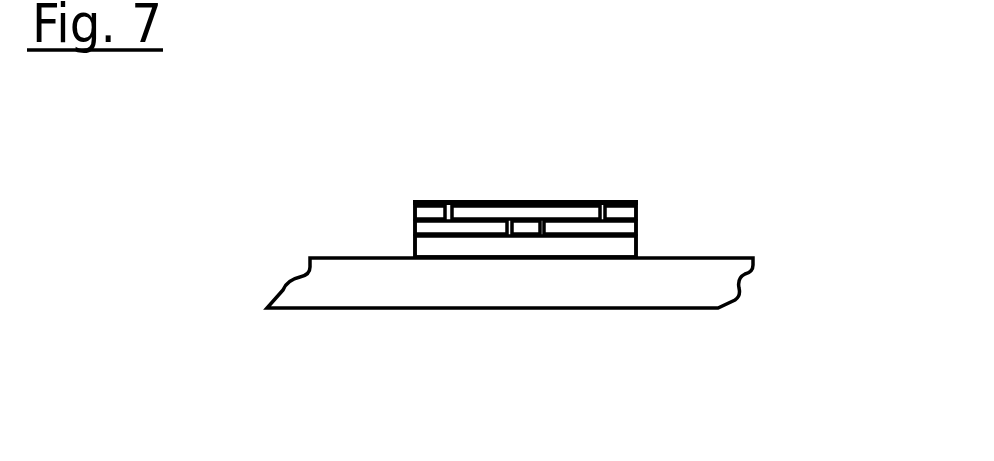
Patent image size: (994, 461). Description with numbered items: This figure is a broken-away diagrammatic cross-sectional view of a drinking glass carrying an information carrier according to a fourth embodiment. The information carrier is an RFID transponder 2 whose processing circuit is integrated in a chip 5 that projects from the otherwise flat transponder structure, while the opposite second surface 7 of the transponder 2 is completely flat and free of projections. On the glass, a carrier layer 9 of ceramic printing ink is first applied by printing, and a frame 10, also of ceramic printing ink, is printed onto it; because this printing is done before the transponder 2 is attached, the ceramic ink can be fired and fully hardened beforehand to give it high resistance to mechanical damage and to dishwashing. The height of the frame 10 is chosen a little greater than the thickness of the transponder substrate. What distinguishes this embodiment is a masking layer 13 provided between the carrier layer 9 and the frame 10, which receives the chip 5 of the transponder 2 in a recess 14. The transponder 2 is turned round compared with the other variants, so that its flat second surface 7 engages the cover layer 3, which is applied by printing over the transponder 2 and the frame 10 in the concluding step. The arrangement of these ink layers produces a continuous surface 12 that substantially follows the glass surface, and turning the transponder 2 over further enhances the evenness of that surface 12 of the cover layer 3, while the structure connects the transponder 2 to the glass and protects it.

The transponder 2 is at (532, 148).
The cover layer 3 is at (635, 200).
The chip 5 is at (522, 220).
The second surface 7 is at (462, 203).
The carrier layer 9 is at (590, 247).
The frame 10 is at (428, 208).
The continuous surface 12 is at (525, 203).
The masking layer 13 is at (432, 224).
The recess 14 is at (517, 242).